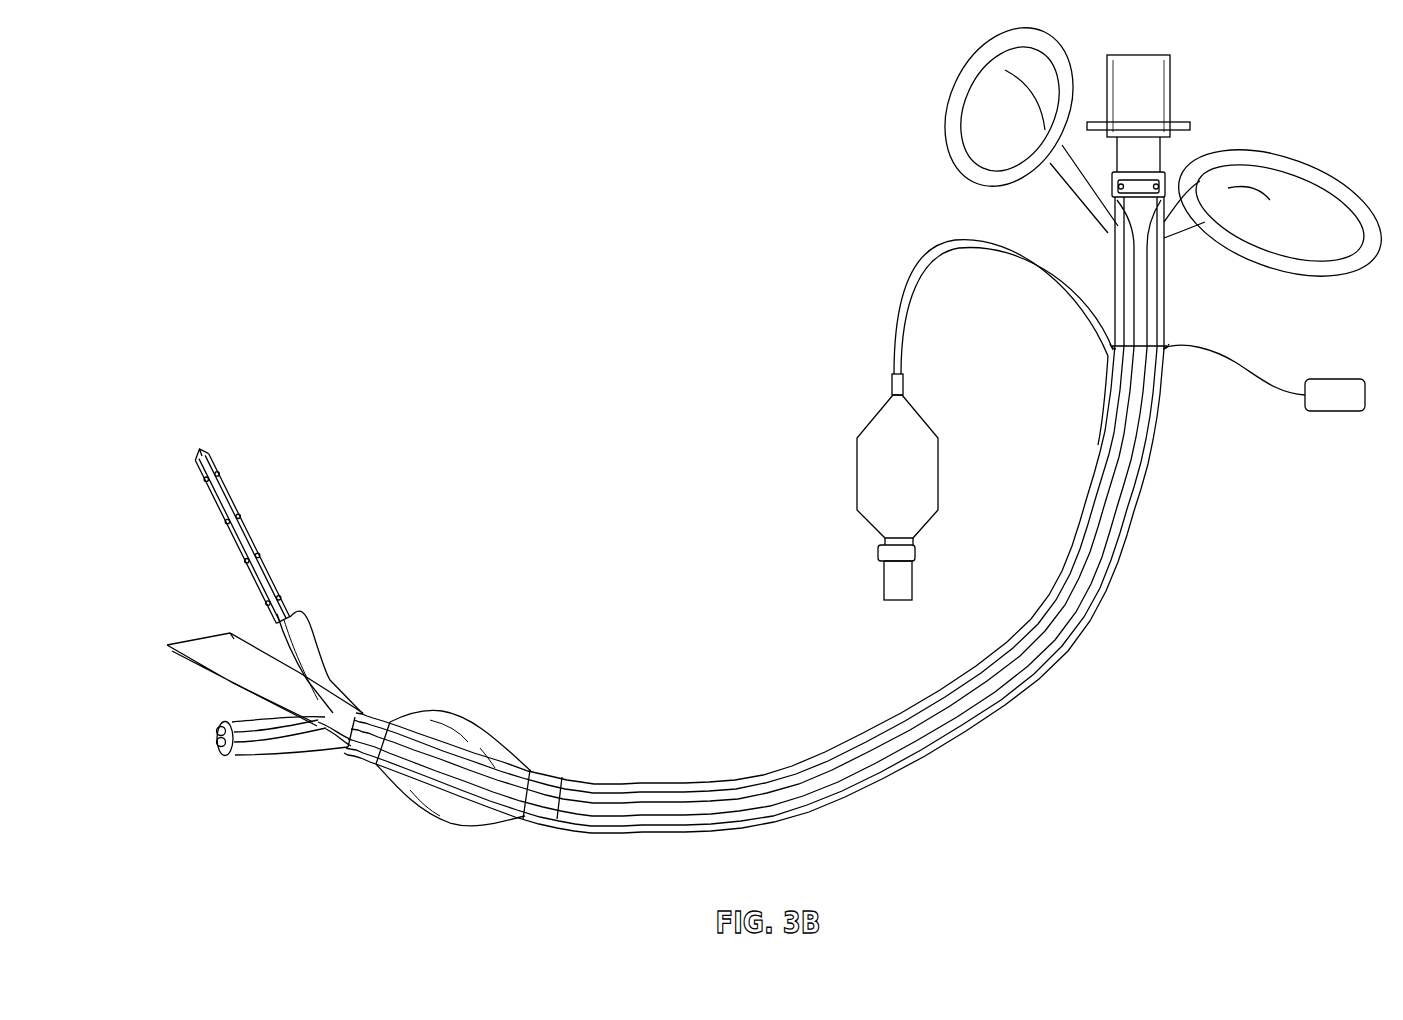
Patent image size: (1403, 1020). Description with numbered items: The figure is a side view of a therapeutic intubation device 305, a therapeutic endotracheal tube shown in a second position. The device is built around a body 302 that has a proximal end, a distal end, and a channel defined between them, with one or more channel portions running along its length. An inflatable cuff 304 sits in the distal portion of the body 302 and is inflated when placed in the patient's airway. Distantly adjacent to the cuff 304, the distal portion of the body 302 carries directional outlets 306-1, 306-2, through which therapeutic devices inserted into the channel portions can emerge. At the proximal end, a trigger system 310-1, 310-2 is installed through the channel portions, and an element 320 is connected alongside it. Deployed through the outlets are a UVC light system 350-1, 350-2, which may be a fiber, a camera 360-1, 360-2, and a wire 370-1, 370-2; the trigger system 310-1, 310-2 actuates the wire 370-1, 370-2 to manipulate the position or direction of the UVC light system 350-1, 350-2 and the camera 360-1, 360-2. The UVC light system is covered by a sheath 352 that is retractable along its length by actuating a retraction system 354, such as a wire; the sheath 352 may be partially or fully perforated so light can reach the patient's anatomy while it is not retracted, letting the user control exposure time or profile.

The body 302 is at (656, 834).
The cuff 304 is at (481, 714).
The therapeutic intubation device 305 is at (520, 230).
The directional outlet 306-1 is at (334, 680).
The directional outlet 306-2 is at (325, 745).
The trigger system 310-1 is at (975, 47).
The trigger system 310-2 is at (1298, 284).
The connector 320 is at (1330, 411).
The UVC light system 350-1 is at (200, 457).
The UVC light system 350-2 is at (216, 726).
The sheath 352 is at (243, 527).
The retraction system 354 is at (1110, 228).
The camera 360-1 is at (290, 603).
The camera 360-2 is at (225, 748).
The wire 370-1 is at (312, 631).
The wire 370-2 is at (232, 765).